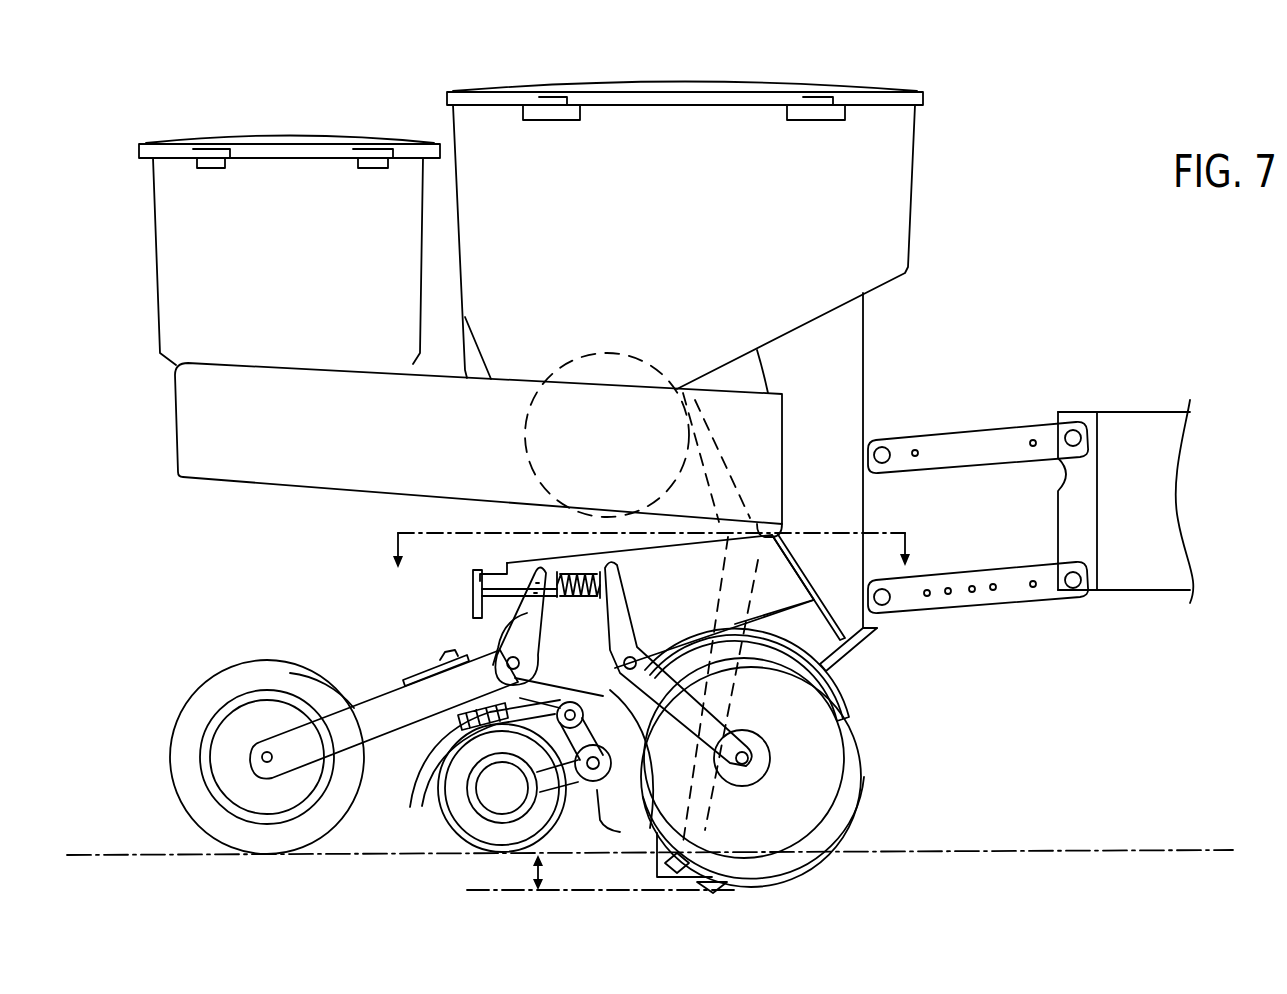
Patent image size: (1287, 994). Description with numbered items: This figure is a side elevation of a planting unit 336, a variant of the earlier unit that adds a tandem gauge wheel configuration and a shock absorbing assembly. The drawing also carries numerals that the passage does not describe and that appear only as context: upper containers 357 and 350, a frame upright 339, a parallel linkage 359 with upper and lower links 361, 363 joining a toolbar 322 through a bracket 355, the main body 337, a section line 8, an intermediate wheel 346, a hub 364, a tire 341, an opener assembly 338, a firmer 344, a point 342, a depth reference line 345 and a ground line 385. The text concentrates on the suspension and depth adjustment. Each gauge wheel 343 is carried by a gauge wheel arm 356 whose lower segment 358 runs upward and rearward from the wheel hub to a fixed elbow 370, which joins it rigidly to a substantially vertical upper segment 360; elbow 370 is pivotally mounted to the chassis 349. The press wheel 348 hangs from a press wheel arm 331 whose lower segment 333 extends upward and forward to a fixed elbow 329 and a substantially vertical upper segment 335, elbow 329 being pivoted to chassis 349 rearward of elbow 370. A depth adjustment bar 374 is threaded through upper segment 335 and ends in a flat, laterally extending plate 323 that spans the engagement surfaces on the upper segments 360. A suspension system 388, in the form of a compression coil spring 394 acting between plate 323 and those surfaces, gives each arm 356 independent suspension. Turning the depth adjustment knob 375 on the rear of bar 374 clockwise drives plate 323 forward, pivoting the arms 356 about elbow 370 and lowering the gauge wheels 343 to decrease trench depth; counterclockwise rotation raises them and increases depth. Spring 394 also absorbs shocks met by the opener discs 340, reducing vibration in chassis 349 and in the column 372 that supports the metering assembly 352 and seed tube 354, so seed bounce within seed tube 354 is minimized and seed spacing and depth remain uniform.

The planting unit 336 is at (1011, 62).
The second hopper 357 is at (286, 243).
The seed hopper 350 is at (657, 207).
The metering assembly 352 is at (645, 360).
The frame upright 339 is at (848, 379).
The parallel linkage 359 is at (1048, 364).
The toolbar 322 is at (1137, 410).
The mounting bracket 355 is at (1077, 498).
The upper parallel link 361 is at (956, 431).
The lower parallel link 363 is at (973, 610).
The row unit body 337 is at (304, 490).
The column 372 is at (357, 497).
The section line 8 is at (656, 554).
The depth adjustment bar 374 is at (497, 570).
The depth adjustment knob 375 is at (467, 572).
The suspension system 388 is at (547, 564).
The chassis 349 is at (537, 563).
The plate 323 is at (557, 572).
The compression coil spring 394 is at (581, 572).
The upper segment 335 is at (503, 617).
The upper segment 360 is at (630, 618).
The seed tube 354 is at (723, 573).
The elbow 370 is at (613, 665).
The press wheel arm 331 is at (395, 722).
The elbow 329 is at (433, 770).
The press wheel 348 is at (343, 823).
The lower segment 333 is at (363, 700).
The press wheel 346 is at (440, 827).
The opener discs 340 is at (650, 813).
The wheel hub 364 is at (760, 733).
The gauge wheel 343 is at (838, 797).
The wheel tire 341 is at (805, 875).
The lower segment 358 is at (822, 671).
The gauge wheel arm 356 is at (692, 732).
The furrow opener assembly 338 is at (903, 824).
The seed firmer 344 is at (672, 893).
The furrow opener point 342 is at (728, 893).
The depth line 345 is at (577, 897).
The ground line 385 is at (1053, 850).